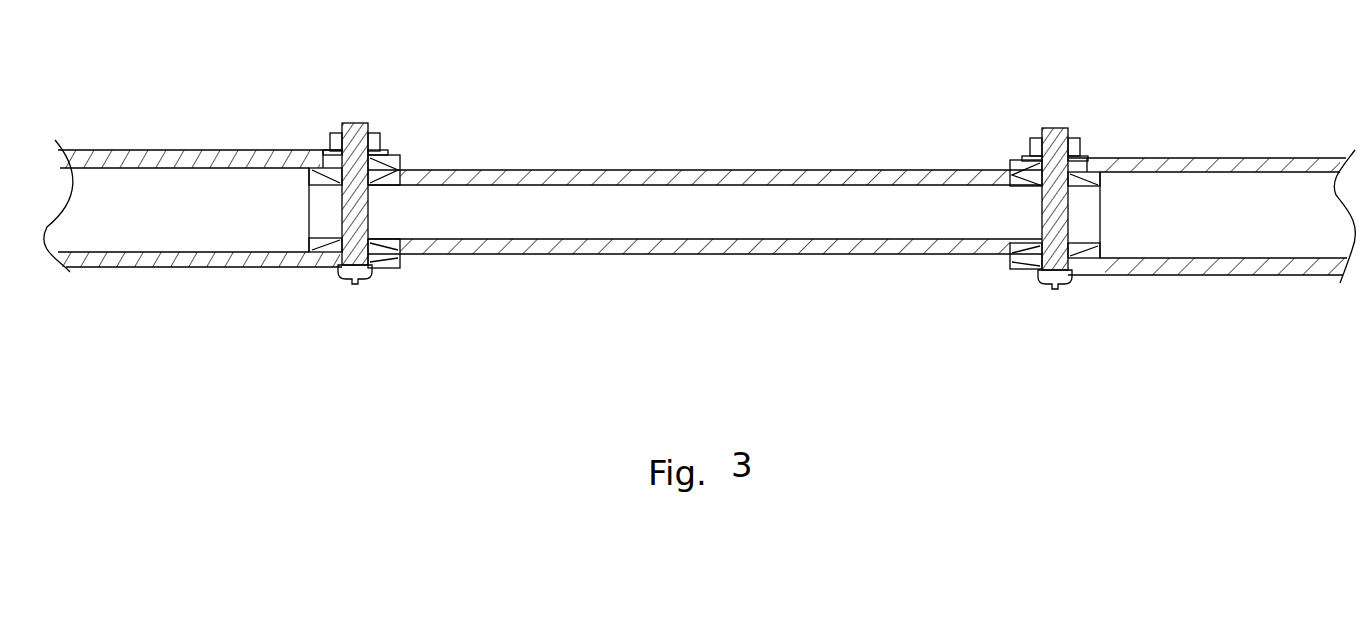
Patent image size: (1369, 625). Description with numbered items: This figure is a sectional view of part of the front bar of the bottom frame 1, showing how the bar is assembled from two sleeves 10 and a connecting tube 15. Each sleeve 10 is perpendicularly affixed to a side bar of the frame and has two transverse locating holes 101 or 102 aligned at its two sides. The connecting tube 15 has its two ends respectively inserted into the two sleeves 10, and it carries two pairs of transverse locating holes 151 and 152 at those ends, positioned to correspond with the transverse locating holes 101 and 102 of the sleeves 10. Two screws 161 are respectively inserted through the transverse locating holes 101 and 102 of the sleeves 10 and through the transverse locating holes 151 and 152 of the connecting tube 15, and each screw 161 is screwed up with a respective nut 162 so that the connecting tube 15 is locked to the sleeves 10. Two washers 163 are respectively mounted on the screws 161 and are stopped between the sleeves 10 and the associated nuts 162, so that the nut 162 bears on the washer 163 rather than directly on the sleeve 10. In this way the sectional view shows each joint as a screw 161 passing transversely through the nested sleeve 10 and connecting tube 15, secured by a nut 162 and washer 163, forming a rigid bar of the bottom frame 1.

The bottom frame 1 is at (182, 138).
The sleeve 10 is at (218, 152).
The connecting tube 15 is at (726, 169).
The transverse locating hole 101 is at (405, 153).
The transverse locating hole 102 is at (1090, 168).
The transverse locating hole 151 is at (385, 171).
The transverse locating hole 152 is at (1093, 184).
The screw 161 is at (367, 280).
The nut 162 is at (371, 150).
The washer 163 is at (386, 153).